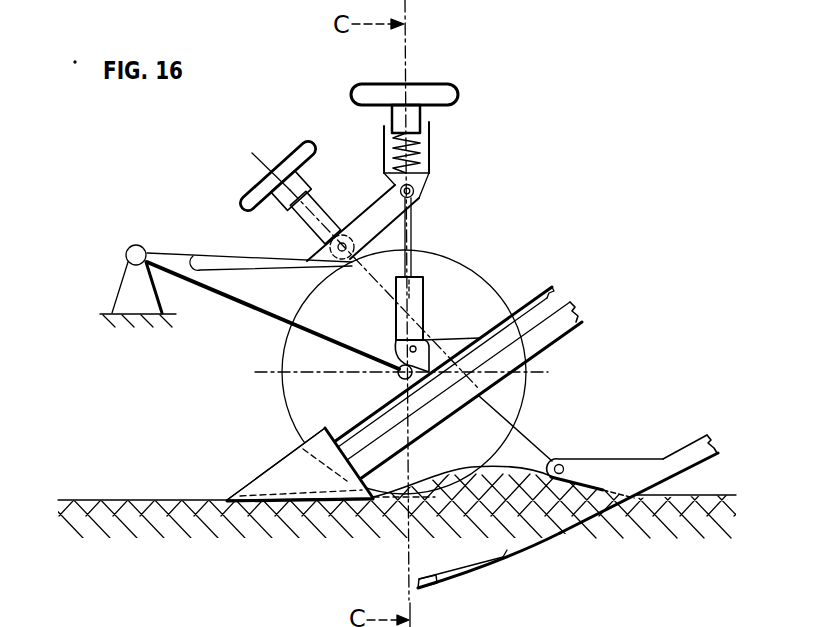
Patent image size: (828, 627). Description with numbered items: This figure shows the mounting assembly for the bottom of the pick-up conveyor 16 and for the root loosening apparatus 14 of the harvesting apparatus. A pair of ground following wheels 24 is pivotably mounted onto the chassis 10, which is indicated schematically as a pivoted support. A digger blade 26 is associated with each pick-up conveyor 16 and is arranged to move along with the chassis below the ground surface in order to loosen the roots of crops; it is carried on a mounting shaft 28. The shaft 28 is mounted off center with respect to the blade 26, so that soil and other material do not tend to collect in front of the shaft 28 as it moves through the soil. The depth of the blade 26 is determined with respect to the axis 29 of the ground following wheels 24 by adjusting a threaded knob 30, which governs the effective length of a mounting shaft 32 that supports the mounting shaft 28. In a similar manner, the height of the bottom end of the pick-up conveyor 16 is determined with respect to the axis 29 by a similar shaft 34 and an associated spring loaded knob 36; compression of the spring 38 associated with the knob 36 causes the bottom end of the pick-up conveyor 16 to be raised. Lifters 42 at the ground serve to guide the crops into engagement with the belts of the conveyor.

The chassis 10 is at (122, 295).
The root loosening apparatus 14 is at (610, 452).
The pick-up conveyor 16 is at (569, 312).
The ground following wheels 24 is at (459, 268).
The digger blade 26 is at (426, 582).
The mounting shaft 28 is at (535, 547).
The axis 29 is at (394, 381).
The threaded knob 30 is at (299, 143).
The mounting shaft 32 is at (543, 453).
The shaft 34 is at (412, 222).
The spring loaded knob 36 is at (446, 89).
The spring 38 is at (418, 149).
The lifters 42 is at (250, 478).